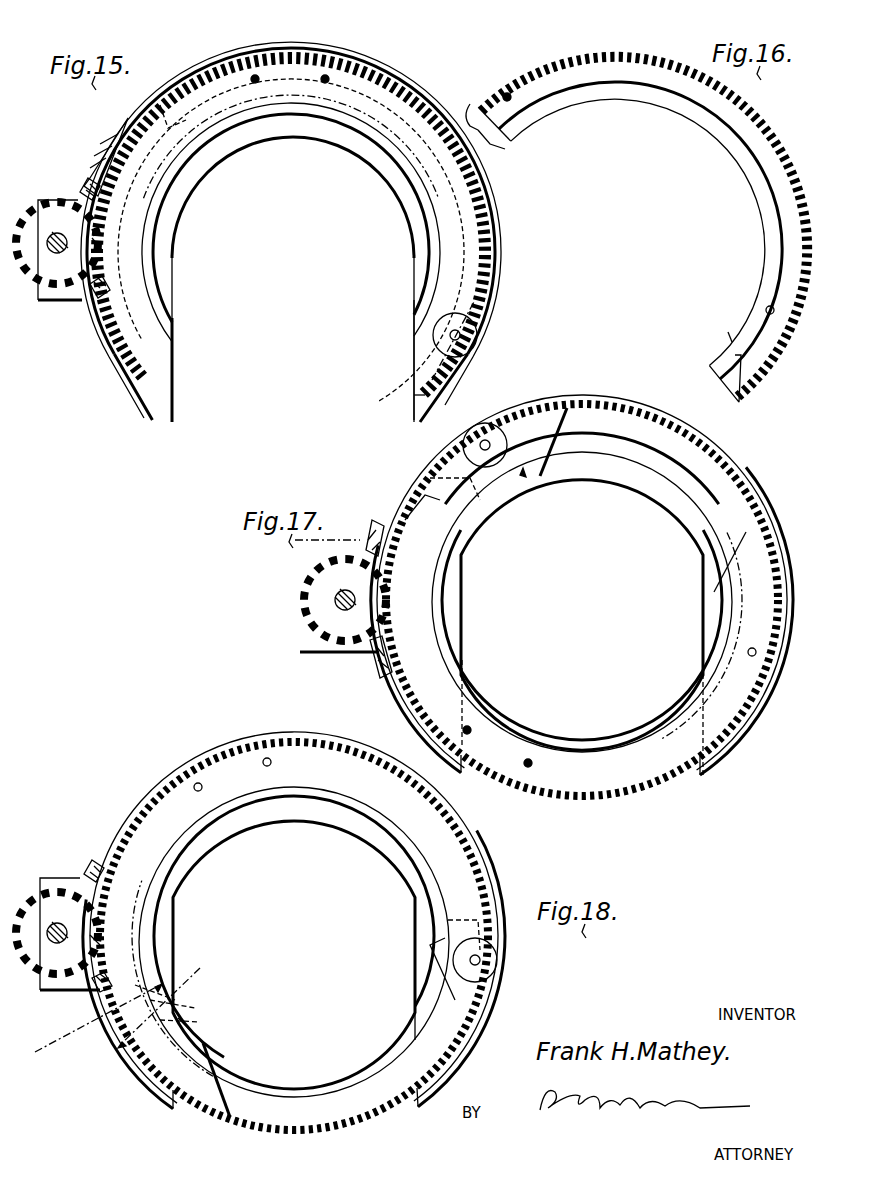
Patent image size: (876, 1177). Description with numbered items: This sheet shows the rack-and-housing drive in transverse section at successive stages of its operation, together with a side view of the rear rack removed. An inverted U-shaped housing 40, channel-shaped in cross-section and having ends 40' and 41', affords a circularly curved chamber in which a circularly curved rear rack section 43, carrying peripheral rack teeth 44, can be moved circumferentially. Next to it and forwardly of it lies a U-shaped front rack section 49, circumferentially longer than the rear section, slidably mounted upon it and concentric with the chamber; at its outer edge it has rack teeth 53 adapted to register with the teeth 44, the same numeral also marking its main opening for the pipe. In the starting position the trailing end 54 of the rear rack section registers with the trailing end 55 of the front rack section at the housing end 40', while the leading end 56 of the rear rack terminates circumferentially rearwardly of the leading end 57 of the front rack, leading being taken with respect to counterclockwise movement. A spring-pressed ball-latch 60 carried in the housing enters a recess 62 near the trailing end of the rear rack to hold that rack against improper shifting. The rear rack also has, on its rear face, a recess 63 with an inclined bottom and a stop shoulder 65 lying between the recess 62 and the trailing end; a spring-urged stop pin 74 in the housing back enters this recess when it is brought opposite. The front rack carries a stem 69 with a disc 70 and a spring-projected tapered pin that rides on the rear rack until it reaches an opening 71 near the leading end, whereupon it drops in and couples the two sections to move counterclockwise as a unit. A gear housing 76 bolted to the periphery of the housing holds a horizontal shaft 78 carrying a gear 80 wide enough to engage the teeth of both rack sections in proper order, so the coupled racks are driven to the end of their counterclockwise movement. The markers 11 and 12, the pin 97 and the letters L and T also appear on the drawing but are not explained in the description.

In FIG. 15, the housing 40 is at (284, 230).
In FIG. 17, the housing 40 is at (582, 572).
In FIG. 18, the housing 40 is at (310, 920).
In FIG. 15, the end of housing 40' is at (386, 361).
In FIG. 18, the end of housing 40' is at (386, 1010).
In FIG. 15, the end of housing 41' is at (293, 278).
In FIG. 18, the end of housing 41' is at (196, 1017).
In FIG. 15, the rear rack section 43 is at (412, 93).
In FIG. 16, the rear rack section 43 is at (770, 168).
In FIG. 17, the rear rack section 43 is at (740, 503).
In FIG. 18, the rear rack section 43 is at (381, 1116).
In FIG. 16, the rack teeth 44 is at (538, 72).
In FIG. 17, the rack teeth 44 is at (722, 490).
In FIG. 15, the front rack section 49 is at (470, 242).
In FIG. 17, the front rack section 49 is at (418, 579).
In FIG. 18, the front rack section 49 is at (130, 928).
In FIG. 15, the rack teeth 53 is at (130, 378).
In FIG. 15, the trailing end of rear rack section 54 is at (413, 390).
In FIG. 16, the trailing end of rear rack section 54 is at (738, 384).
In FIG. 17, the trailing end of rear rack section 54 is at (706, 739).
In FIG. 15, the trailing end of front rack section 55 is at (417, 352).
In FIG. 17, the trailing end of front rack section 55 is at (498, 528).
In FIG. 18, the trailing end of front rack section 55 is at (478, 1012).
In FIG. 15, the leading end of rear rack section 56 is at (168, 136).
In FIG. 16, the leading end of rear rack section 56 is at (502, 146).
In FIG. 17, the leading end of rear rack section 56 is at (420, 478).
In FIG. 18, the leading end of rear rack section 56 is at (466, 926).
In FIG. 15, the leading end of front rack section 57 is at (174, 368).
In FIG. 17, the leading end of front rack section 57 is at (714, 592).
In FIG. 18, the leading end of front rack section 57 is at (214, 1058).
In FIG. 15, the ball-latch 60 is at (478, 327).
In FIG. 16, the recess 62 is at (768, 309).
In FIG. 17, the recess 62 is at (772, 663).
In FIG. 18, the recess 62 is at (122, 1076).
In FIG. 16, the recess 63 is at (768, 311).
In FIG. 16, the stop shoulder 65 is at (760, 320).
In FIG. 18, the stop shoulder 65 is at (150, 990).
In FIG. 17, the stem 69 is at (478, 445).
In FIG. 18, the stem 69 is at (497, 955).
In FIG. 17, the disc 70 is at (470, 457).
In FIG. 18, the disc 70 is at (482, 962).
In FIG. 15, the opening 71 is at (150, 88).
In FIG. 16, the opening 71 is at (505, 92).
In FIG. 18, the stop pin 74 is at (183, 997).
In FIG. 15, the gear housing 76 is at (50, 304).
In FIG. 18, the gear housing 76 is at (55, 875).
In FIG. 15, the shaft 78 is at (57, 225).
In FIG. 17, the shaft 78 is at (336, 603).
In FIG. 18, the shaft 78 is at (78, 928).
In FIG. 15, the gear 80 is at (98, 248).
In FIG. 18, the gear 80 is at (88, 938).
In FIG. 15, the pin 97 is at (325, 77).
In FIG. 17, the section line 11 is at (490, 430).
In FIG. 18, the section line 12 is at (123, 993).
In FIG. 16, the lug L is at (469, 104).
In FIG. 16, the tooth T is at (730, 356).